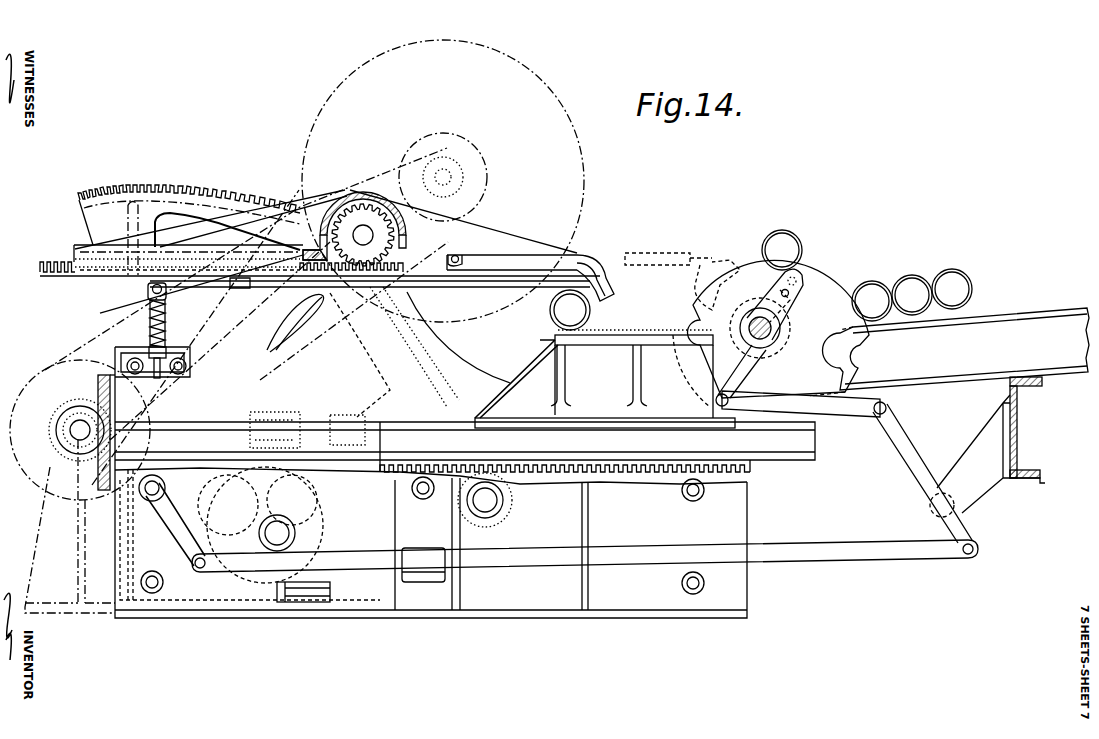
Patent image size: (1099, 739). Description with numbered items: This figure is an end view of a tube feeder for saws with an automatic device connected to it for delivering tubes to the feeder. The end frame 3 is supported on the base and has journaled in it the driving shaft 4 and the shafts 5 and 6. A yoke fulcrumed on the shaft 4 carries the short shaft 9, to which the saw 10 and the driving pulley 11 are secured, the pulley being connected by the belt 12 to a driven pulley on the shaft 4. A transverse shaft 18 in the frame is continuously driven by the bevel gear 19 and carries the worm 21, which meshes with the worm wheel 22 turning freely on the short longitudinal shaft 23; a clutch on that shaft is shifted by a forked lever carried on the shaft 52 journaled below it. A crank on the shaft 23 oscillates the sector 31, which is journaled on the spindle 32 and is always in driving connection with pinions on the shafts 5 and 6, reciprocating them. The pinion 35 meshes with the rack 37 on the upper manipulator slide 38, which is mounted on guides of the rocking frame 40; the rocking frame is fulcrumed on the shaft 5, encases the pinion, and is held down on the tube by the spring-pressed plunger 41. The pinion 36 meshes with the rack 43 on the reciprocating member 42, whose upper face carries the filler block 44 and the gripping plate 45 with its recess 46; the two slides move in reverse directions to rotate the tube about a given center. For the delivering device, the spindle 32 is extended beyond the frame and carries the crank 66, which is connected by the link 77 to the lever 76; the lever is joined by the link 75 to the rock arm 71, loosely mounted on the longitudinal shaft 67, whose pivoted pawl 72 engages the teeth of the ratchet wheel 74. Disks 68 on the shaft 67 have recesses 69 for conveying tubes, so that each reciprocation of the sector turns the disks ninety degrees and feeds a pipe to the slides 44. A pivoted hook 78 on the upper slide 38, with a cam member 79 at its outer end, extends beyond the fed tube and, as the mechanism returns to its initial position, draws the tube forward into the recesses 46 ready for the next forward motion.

The end frame 3 is at (200, 600).
The driving shaft 4 is at (70, 433).
The shaft 5 is at (363, 235).
The shaft 6 is at (491, 508).
The short shaft 9 is at (446, 172).
The saw 10 is at (540, 80).
The driving pulley 11 is at (450, 145).
The belt 12 is at (40, 382).
The transverse shaft 18 is at (162, 424).
The bevel gear 19 is at (100, 393).
The worm 21 is at (290, 412).
The worm wheel 22 is at (243, 600).
The short longitudinal shaft 23 is at (288, 533).
The sector 31 is at (230, 190).
The spindle 32 is at (140, 494).
The pinion 35 is at (352, 203).
The pinion 36 is at (514, 510).
The rack 37 is at (58, 262).
The upper manipulator slide 38 is at (446, 283).
The rocking frame 40 is at (197, 247).
The spring-pressed plunger 41 is at (166, 318).
The reciprocating member 42 is at (597, 447).
The rack 43 is at (635, 474).
The filler block 44 is at (605, 386).
The gripping plate 45 is at (643, 326).
The recess 46 is at (548, 341).
The shaft 52 is at (310, 603).
The crank 66 is at (176, 528).
The longitudinal shaft 67 is at (766, 342).
The disk 68 is at (771, 333).
The recess 69 is at (768, 242).
The rock arm 71 is at (748, 354).
The pawl 72 is at (781, 284).
The ratchet wheel 74 is at (766, 292).
The link 75 is at (856, 414).
The lever 76 is at (905, 468).
The link 77 is at (806, 556).
The pivoted hook 78 is at (586, 262).
The cam member 79 is at (592, 311).